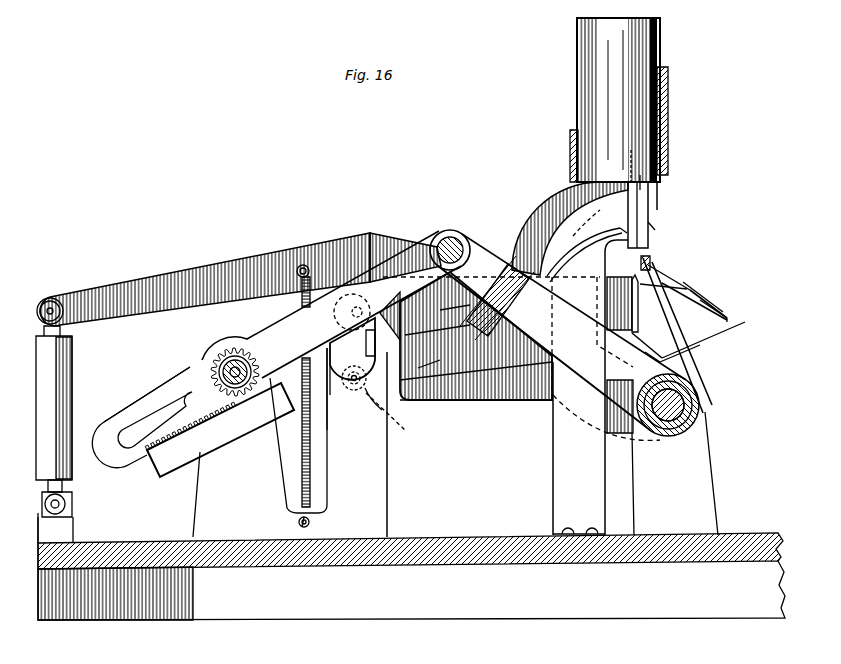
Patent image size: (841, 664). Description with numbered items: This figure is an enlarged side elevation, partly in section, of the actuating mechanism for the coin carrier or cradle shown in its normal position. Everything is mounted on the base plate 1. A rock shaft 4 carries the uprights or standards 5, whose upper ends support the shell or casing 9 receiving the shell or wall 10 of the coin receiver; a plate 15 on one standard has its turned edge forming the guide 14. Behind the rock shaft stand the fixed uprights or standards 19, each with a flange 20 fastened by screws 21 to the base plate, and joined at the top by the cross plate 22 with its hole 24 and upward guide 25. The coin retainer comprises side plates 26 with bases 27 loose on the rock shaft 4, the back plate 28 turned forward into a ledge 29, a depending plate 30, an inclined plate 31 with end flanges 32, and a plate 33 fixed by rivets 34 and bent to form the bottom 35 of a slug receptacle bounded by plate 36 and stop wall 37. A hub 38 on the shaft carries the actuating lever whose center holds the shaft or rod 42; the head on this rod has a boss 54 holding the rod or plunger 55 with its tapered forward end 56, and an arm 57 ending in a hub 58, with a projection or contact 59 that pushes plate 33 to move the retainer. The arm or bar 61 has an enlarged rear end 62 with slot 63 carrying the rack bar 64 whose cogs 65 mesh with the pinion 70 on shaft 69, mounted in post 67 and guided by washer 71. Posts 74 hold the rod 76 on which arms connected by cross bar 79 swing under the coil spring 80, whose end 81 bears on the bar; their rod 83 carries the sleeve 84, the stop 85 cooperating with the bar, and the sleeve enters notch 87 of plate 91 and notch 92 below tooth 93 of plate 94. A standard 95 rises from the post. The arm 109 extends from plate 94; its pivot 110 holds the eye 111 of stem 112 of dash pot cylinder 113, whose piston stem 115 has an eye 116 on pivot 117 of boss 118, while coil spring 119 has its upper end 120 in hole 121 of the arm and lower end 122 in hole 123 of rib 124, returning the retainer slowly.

The base plate 1 is at (627, 587).
The rock shaft 4 is at (700, 415).
The uprights or standards 5 is at (545, 213).
The shell or casing 9 is at (668, 88).
The shell or wall 10 is at (652, 50).
The guide 14 is at (648, 222).
The plate 15 is at (650, 208).
The uprights or standards 19 is at (606, 381).
The flange 20 is at (583, 540).
The screws 21 is at (592, 527).
The cross plate 22 is at (650, 244).
The hole 24 is at (645, 196).
The guide 25 is at (660, 158).
The plates 26 is at (724, 339).
The base 27 is at (714, 353).
The back plate 28 is at (660, 272).
The ledge 29 is at (650, 255).
The plate 30 is at (660, 260).
The plate 31 is at (665, 286).
The flange 32 is at (690, 302).
The plate 33 is at (690, 382).
The rivets 34 is at (627, 451).
The bottom 35 is at (645, 328).
The plate 36 is at (758, 308).
The wall or plate 37 is at (748, 294).
The hub 38 is at (700, 400).
The shaft or rod 42 is at (465, 240).
The boss or extension 54 is at (505, 290).
The rod or plunger 55 is at (557, 281).
The forward end 56 is at (690, 214).
The arm 57 is at (562, 332).
The hub 58 is at (675, 357).
The projection or contact 59 is at (734, 326).
The arm or bar 61 is at (331, 304).
The rear end 62 is at (238, 352).
The slot 63 is at (185, 380).
The rack bar 64 is at (220, 430).
The cogs or leaves 65 is at (192, 426).
The post 67 is at (214, 494).
The shaft 69 is at (246, 371).
The pinion 70 is at (222, 390).
The washer 71 is at (250, 350).
The posts 74 is at (343, 406).
The shaft or rod 76 is at (384, 410).
The cross plate or bar 79 is at (339, 389).
The coil spring 80 is at (395, 419).
The end 81 is at (354, 367).
The rod 83 is at (467, 303).
The sleeve 84 is at (388, 316).
The stop 85 is at (352, 349).
The notch 87 is at (425, 370).
The plate 91 is at (482, 403).
The notch 92 is at (437, 325).
The point or tooth 93 is at (476, 336).
The plate 94 is at (410, 340).
The standard 95 is at (454, 300).
The arm 109 is at (285, 252).
The pivot 110 is at (58, 303).
The eye 111 is at (62, 312).
The stem 112 is at (63, 327).
The cylinder 113 is at (70, 370).
The stem 115 is at (63, 490).
The eye 116 is at (70, 507).
The pivot 117 is at (68, 515).
The boss 118 is at (72, 531).
The coil spring 119 is at (303, 434).
The upper end 120 is at (306, 267).
The hole 121 is at (309, 270).
The lower end 122 is at (298, 522).
The hole 123 is at (301, 528).
The rib or flange 124 is at (314, 523).